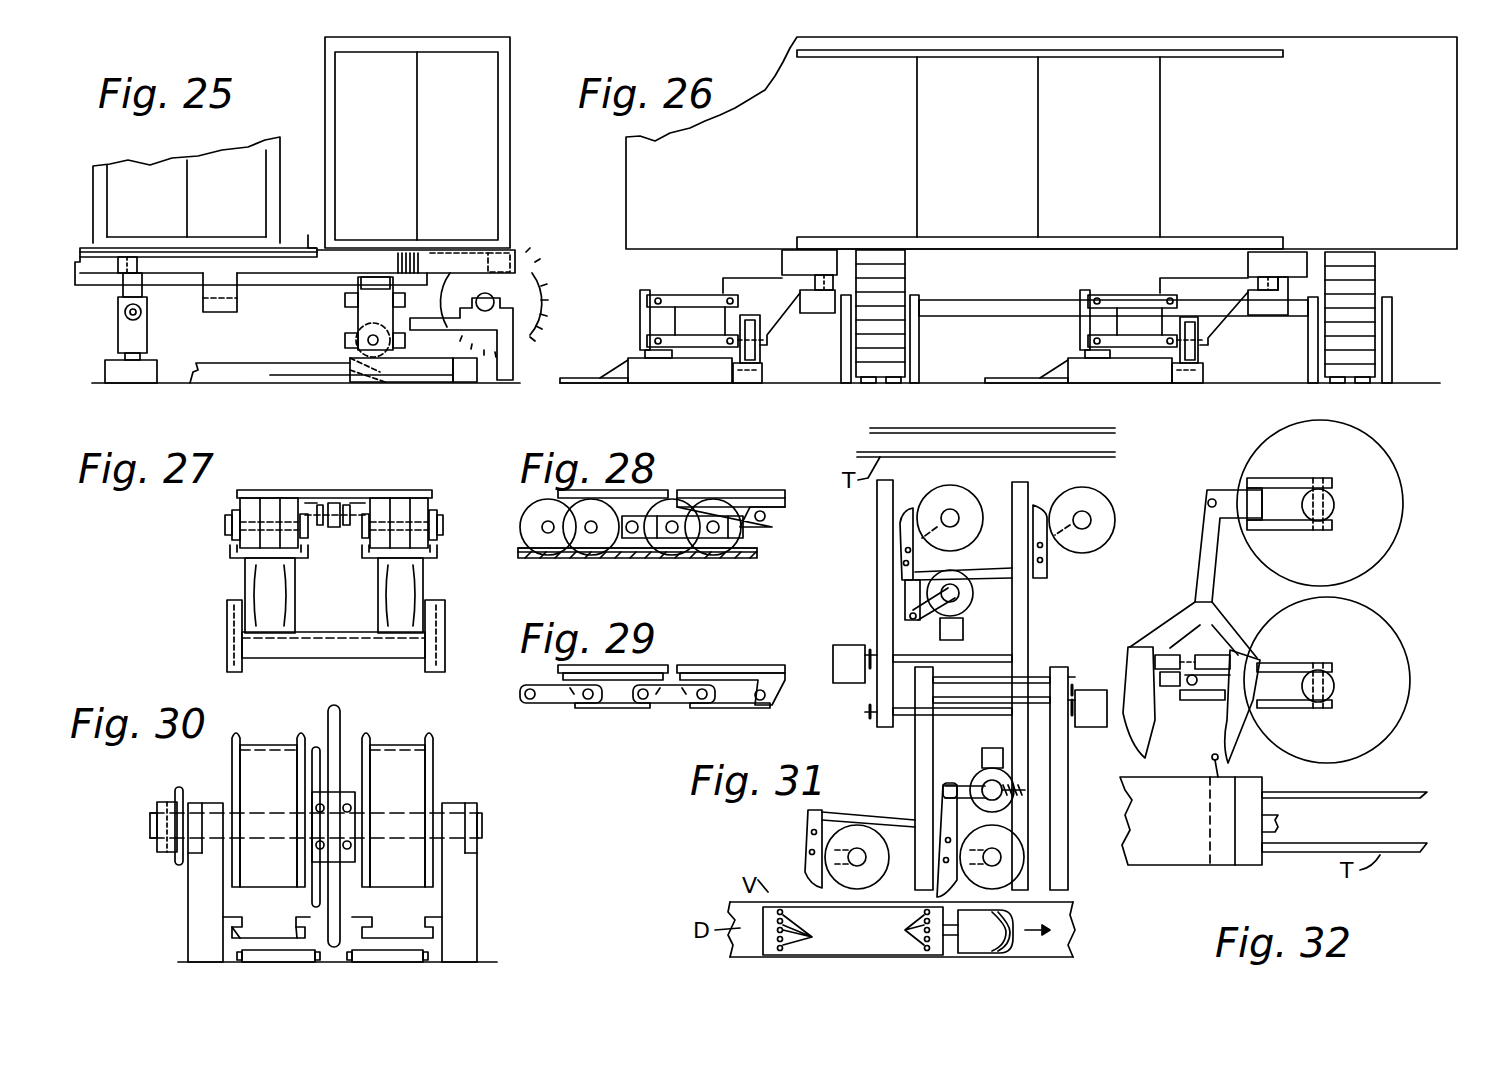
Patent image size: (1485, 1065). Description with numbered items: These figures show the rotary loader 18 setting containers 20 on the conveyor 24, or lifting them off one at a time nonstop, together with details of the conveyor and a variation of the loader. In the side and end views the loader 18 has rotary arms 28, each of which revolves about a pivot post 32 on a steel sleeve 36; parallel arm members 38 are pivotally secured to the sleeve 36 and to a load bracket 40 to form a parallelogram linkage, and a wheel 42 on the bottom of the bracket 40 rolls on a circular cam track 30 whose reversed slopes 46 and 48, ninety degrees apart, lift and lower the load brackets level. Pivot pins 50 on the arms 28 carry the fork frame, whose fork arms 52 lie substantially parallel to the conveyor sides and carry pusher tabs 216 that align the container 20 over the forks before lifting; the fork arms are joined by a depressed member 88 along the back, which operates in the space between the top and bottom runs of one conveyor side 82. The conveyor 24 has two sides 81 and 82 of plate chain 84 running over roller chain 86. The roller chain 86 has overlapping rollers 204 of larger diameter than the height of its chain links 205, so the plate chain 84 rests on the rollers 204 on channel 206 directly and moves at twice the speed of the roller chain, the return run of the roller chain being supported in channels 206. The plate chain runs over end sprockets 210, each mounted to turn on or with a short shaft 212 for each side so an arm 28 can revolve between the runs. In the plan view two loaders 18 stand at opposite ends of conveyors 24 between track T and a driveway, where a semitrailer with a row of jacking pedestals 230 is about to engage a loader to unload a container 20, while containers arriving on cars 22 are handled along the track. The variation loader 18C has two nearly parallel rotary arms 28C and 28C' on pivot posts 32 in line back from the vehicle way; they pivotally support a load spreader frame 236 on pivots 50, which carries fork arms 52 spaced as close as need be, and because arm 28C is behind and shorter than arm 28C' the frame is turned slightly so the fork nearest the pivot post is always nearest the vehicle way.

In FIG. 25, the rotary loader 18 is at (345, 340).
In FIG. 26, the rotary loader 18 is at (634, 290).
In FIG. 31, the rotary loader 18 is at (1048, 578).
In FIG. 32, the loader variation 18C is at (1204, 476).
In FIG. 25, the container 20 is at (312, 153).
In FIG. 26, the container 20 is at (626, 161).
In FIG. 31, the container 20 is at (800, 910).
In FIG. 32, the container 20 is at (1160, 865).
In FIG. 32, the car 22 is at (1258, 868).
In FIG. 25, the conveyor 24 is at (541, 268).
In FIG. 26, the conveyor 24 is at (919, 340).
In FIG. 27, the conveyor 24 is at (208, 528).
In FIG. 30, the conveyor 24 is at (147, 832).
In FIG. 31, the conveyor 24 is at (990, 730).
In FIG. 26, the rotary arm 28 is at (723, 278).
In FIG. 32, the rotary arm 28C is at (1292, 522).
In FIG. 32, the rotary arm 28C' is at (1303, 664).
In FIG. 25, the cam track 30 is at (430, 370).
In FIG. 26, the cam track 30 is at (590, 362).
In FIG. 26, the pivot post 32 is at (668, 272).
In FIG. 32, the pivot post 32 is at (1334, 504).
In FIG. 25, the steel sleeve 36 is at (356, 318).
In FIG. 26, the steel sleeve 36 is at (640, 325).
In FIG. 26, the parallel arm member 38 is at (1088, 320).
In FIG. 26, the load bracket 40 is at (772, 315).
In FIG. 26, the wheel 42 is at (760, 355).
In FIG. 25, the slope 46 is at (466, 365).
In FIG. 26, the slope 46 is at (655, 372).
In FIG. 25, the slope 48 is at (368, 365).
In FIG. 26, the slope 48 is at (745, 375).
In FIG. 32, the pivot pin 50 is at (1208, 505).
In FIG. 25, the fork arm 52 is at (512, 257).
In FIG. 26, the fork arm 52 is at (782, 264).
In FIG. 32, the fork arm 52 is at (1222, 742).
In FIG. 26, the conveyor side 81 is at (1368, 276).
In FIG. 26, the conveyor side 82 is at (905, 273).
In FIG. 26, the plate chain 84 is at (856, 348).
In FIG. 27, the plate chain 84 is at (338, 490).
In FIG. 28, the plate chain 84 is at (748, 490).
In FIG. 29, the plate chain 84 is at (740, 650).
In FIG. 27, the roller chain 86 is at (228, 550).
In FIG. 28, the roller chain 86 is at (718, 560).
In FIG. 25, the depressed member 88 is at (222, 312).
In FIG. 26, the depressed member 88 is at (1000, 300).
In FIG. 27, the roller 204 is at (288, 500).
In FIG. 28, the roller 204 is at (640, 580).
In FIG. 28, the chain link 205 is at (750, 530).
In FIG. 27, the channel 206 is at (370, 560).
In FIG. 28, the channel 206 is at (757, 556).
In FIG. 30, the channel 206 is at (232, 767).
In FIG. 30, the end sprocket 210 is at (340, 712).
In FIG. 30, the short shaft 212 is at (482, 822).
In FIG. 25, the pusher tab 216 is at (308, 234).
In FIG. 31, the jacking pedestal 230 is at (905, 930).
In FIG. 32, the load spreader frame 236 is at (1198, 572).